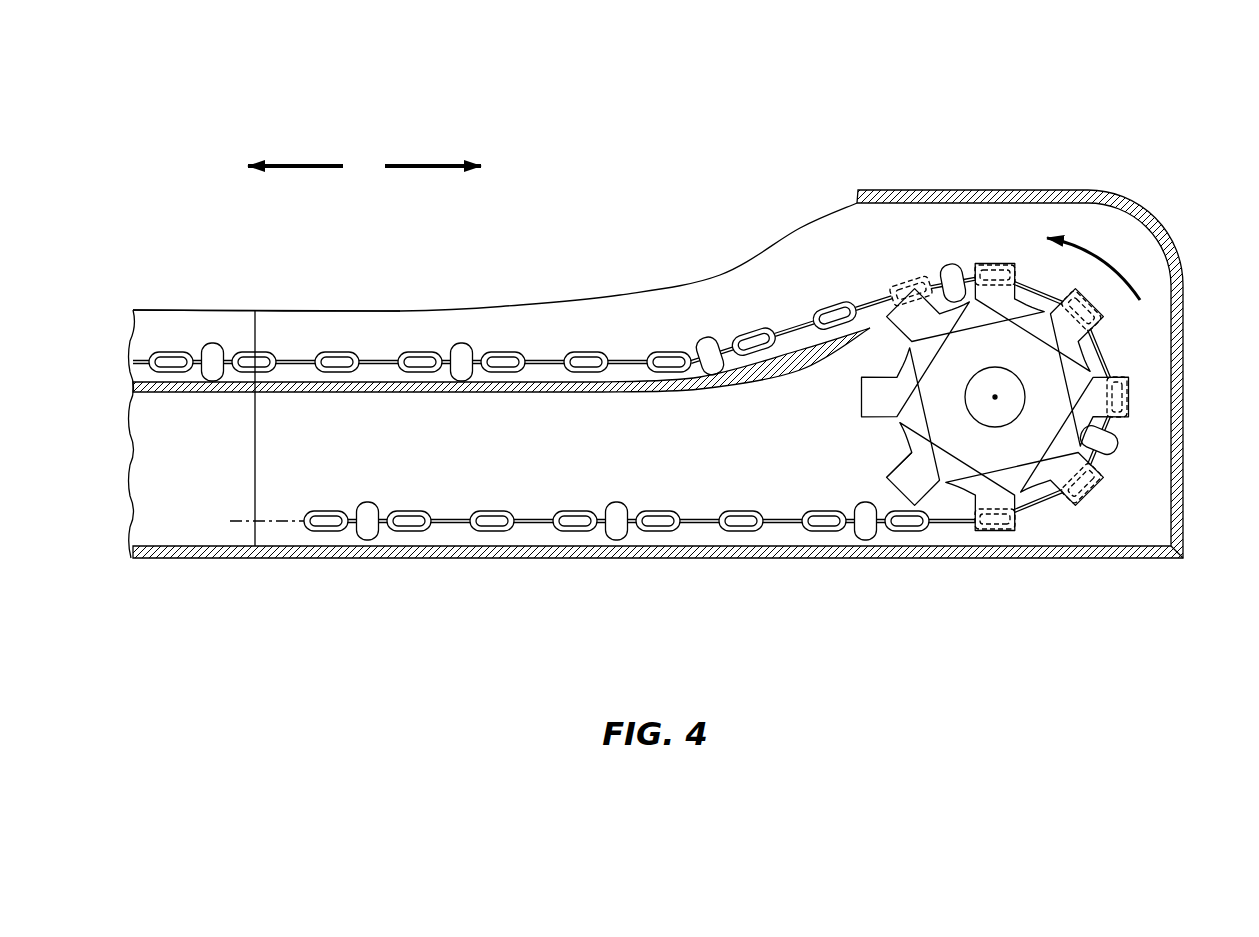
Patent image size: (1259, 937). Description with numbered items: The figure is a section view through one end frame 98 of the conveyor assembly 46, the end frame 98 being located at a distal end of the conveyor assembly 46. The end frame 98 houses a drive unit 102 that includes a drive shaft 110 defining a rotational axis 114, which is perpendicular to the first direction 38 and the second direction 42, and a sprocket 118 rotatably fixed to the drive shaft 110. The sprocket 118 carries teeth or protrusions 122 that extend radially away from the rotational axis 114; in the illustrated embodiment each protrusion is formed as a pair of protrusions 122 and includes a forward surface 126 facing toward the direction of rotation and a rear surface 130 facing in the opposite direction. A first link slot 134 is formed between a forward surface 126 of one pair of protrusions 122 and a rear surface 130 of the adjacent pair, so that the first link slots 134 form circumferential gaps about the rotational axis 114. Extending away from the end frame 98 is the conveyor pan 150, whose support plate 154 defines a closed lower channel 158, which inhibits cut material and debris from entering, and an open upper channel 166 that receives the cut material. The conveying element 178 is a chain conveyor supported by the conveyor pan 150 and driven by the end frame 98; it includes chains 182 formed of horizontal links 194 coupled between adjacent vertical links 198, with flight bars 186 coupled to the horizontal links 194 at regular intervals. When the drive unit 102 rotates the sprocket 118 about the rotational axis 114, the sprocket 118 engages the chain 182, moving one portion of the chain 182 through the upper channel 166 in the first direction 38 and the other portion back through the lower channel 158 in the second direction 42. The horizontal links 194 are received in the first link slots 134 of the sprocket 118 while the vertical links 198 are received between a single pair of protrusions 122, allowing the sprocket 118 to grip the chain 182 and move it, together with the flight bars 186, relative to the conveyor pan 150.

The first direction 38 is at (297, 165).
The second direction 42 is at (425, 165).
The conveyor assembly 46 is at (895, 83).
The end frame 98 is at (1152, 172).
The drive unit 102 is at (1143, 513).
The drive shaft 110 is at (1018, 379).
The rotational axis 114 is at (995, 398).
The sprocket 118 is at (849, 432).
The protrusions 122 is at (892, 469).
The forward surface 126 is at (1128, 384).
The rear surface 130 is at (1126, 419).
The first link slot 134 is at (1134, 348).
The conveyor pan 150 is at (188, 310).
The support plate 154 is at (178, 393).
The lower channel 158 is at (162, 488).
The upper channel 166 is at (169, 328).
The conveying element 178 is at (541, 337).
The chain 182 is at (539, 534).
The flight bars 186 is at (219, 344).
The horizontal links 194 is at (300, 357).
The vertical links 198 is at (401, 352).